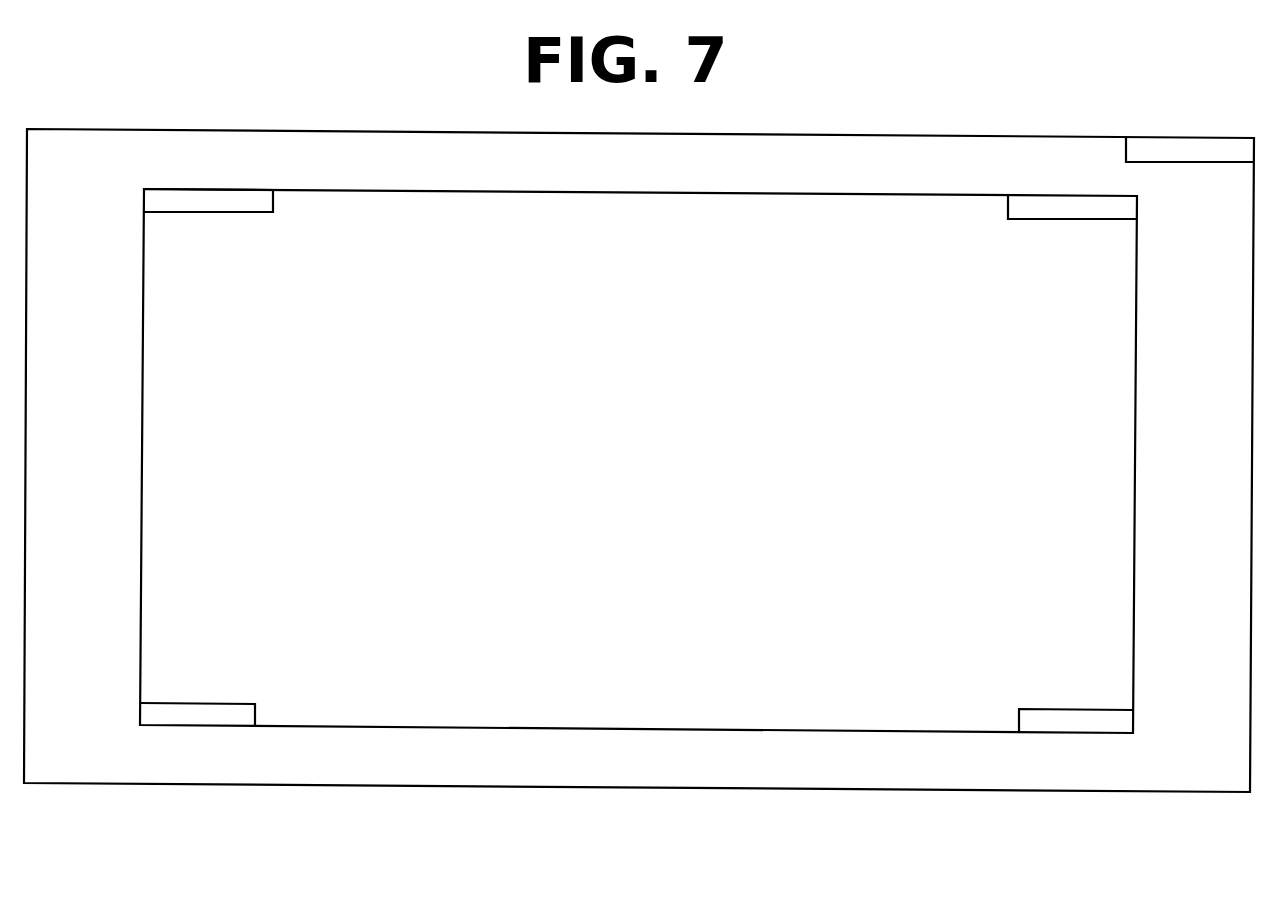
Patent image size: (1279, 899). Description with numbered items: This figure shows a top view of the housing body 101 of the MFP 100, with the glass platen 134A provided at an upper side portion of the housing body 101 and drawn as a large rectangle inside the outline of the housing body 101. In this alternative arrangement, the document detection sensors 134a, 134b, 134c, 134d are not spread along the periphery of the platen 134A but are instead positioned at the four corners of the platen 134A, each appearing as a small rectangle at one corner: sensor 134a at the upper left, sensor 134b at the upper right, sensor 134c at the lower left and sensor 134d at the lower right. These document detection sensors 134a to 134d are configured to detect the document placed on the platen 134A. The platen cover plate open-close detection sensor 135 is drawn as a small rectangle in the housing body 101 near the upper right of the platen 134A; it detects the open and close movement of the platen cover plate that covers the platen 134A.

The MFP 100 is at (415, 96).
The housing body 101 is at (218, 130).
The platen 134A is at (957, 208).
The document detection sensor 134a is at (178, 207).
The document detection sensor 134b is at (1083, 208).
The document detection sensor 134c is at (197, 728).
The document detection sensor 134d is at (1073, 737).
The platen cover plate open-close detection sensor 135 is at (1183, 148).